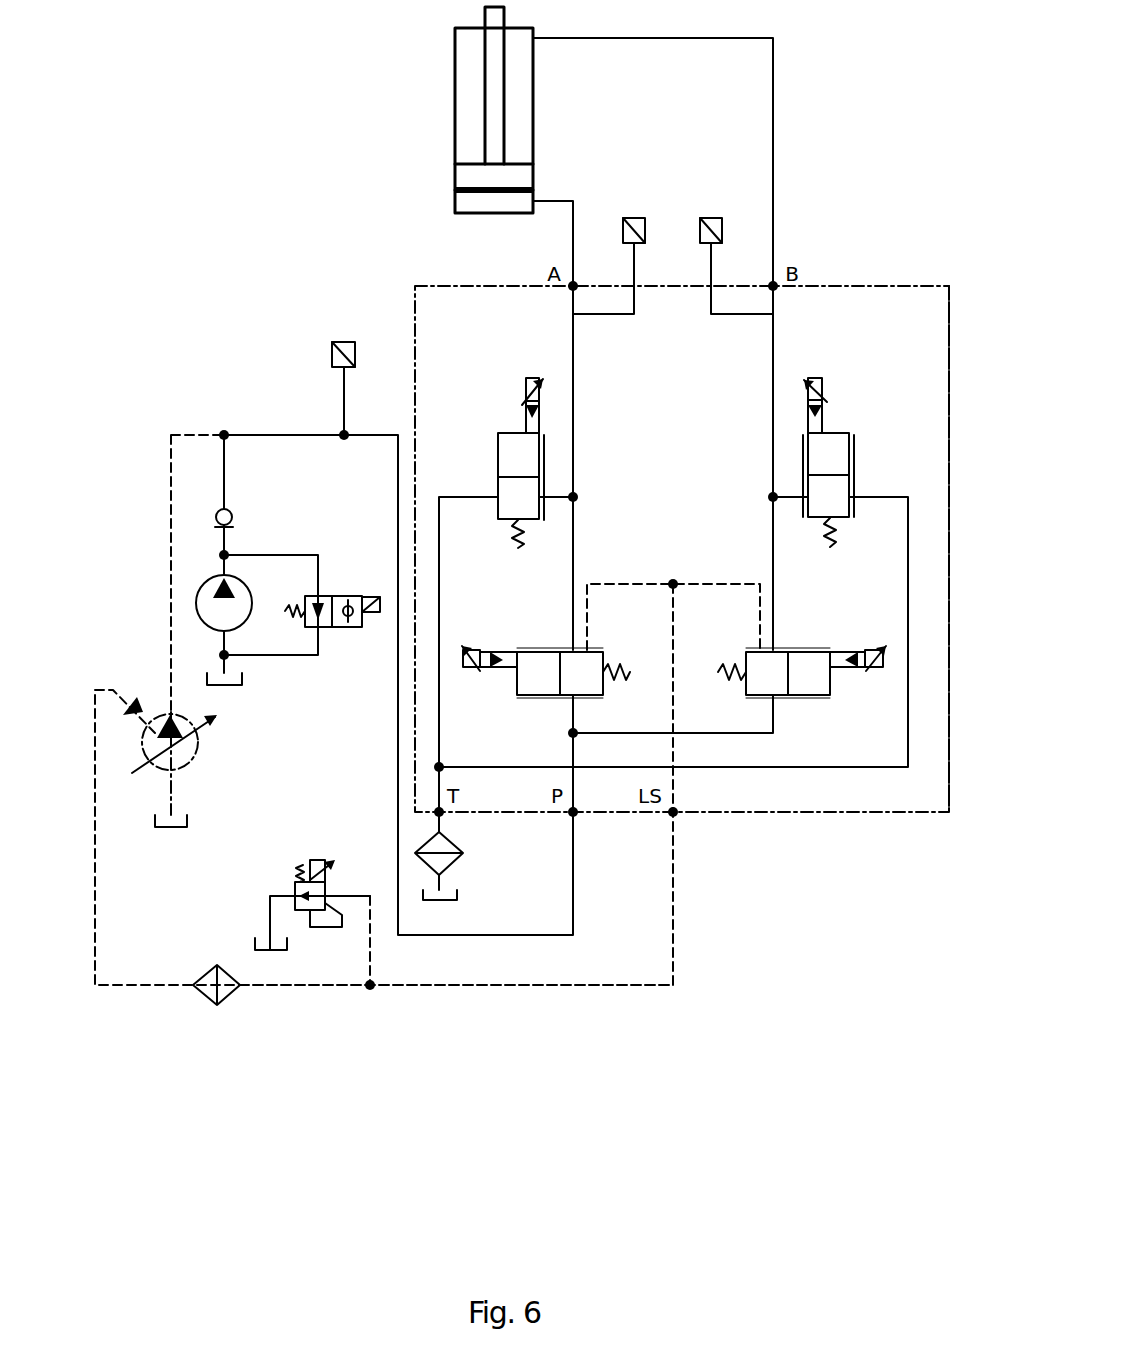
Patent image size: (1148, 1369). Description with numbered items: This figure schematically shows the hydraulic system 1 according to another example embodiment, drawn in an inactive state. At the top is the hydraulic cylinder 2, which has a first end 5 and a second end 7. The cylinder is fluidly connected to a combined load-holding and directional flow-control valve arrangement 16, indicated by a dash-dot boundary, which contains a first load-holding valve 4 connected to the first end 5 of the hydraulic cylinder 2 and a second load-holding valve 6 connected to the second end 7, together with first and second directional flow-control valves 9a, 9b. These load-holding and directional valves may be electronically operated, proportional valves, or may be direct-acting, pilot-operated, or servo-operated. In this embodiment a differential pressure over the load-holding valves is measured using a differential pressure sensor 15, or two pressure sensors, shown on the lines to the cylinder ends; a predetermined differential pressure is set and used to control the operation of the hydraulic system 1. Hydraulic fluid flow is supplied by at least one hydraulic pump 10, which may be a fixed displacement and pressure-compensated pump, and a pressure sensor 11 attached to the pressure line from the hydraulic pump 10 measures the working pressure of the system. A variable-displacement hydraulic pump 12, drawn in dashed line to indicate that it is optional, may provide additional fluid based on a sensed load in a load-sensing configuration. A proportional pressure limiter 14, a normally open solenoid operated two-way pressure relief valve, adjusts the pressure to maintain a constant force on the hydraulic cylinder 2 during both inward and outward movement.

The hydraulic system 1 is at (268, 222).
The hydraulic cylinder 2 is at (455, 80).
The first load-holding valve 4 is at (497, 445).
The first end 5 is at (455, 202).
The second load-holding valve 6 is at (838, 432).
The second end 7 is at (455, 38).
The first directional flow-control valve 9a is at (533, 698).
The second directional flow-control valve 9b is at (810, 698).
The hydraulic pump 10 is at (197, 593).
The pressure sensor 11 is at (345, 340).
The variable-displacement hydraulic pump 12 is at (160, 772).
The proportional pressure limiter 14 is at (293, 888).
The differential pressure sensor 15 is at (711, 218).
The combined load-holding and directional flow-control valve arrangement 16 is at (851, 813).